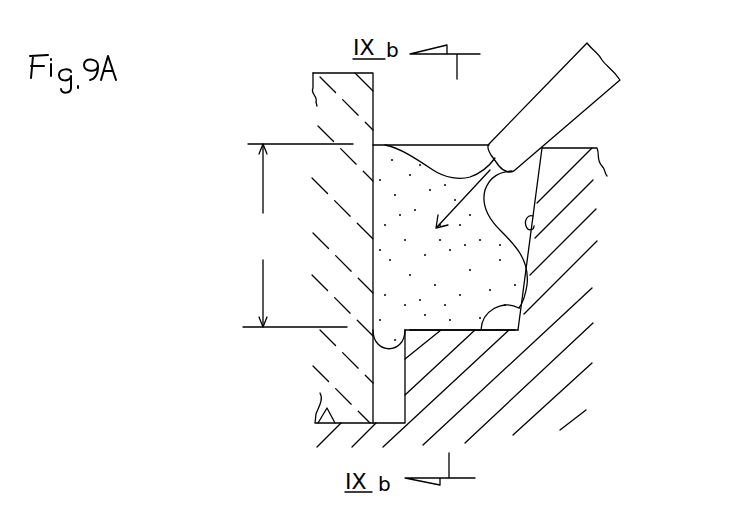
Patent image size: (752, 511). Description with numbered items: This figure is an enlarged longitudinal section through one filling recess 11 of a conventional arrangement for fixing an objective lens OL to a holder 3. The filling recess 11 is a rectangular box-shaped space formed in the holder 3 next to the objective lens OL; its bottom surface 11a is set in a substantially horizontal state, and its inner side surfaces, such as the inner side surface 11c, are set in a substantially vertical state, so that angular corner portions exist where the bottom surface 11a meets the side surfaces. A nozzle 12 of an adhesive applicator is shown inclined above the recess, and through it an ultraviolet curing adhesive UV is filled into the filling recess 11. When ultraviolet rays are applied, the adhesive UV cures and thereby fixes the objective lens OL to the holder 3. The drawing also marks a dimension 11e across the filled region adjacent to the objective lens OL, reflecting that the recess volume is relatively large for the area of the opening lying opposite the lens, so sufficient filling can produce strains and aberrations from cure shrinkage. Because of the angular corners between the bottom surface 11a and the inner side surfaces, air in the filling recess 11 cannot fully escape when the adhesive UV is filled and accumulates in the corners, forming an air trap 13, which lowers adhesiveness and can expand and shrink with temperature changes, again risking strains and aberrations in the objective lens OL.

The holder 3 is at (572, 213).
The filling recess 11 is at (441, 134).
The bottom surface 11a is at (457, 332).
The inner side surface 11c is at (533, 237).
The adhesive thickness 11e is at (296, 235).
The nozzle 12 is at (530, 123).
The air trap 13 is at (507, 315).
The objective lens OL is at (350, 98).
The ultraviolet curing adhesive UV is at (403, 268).